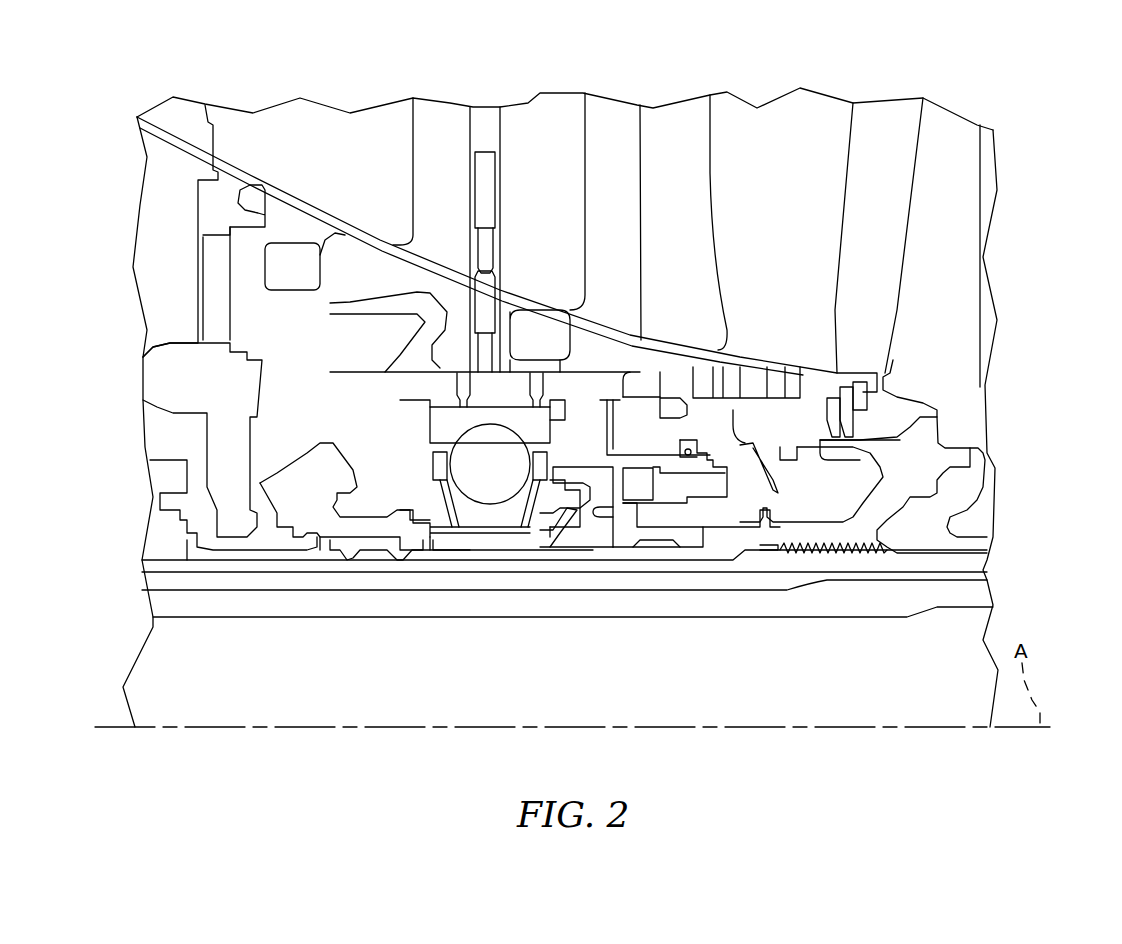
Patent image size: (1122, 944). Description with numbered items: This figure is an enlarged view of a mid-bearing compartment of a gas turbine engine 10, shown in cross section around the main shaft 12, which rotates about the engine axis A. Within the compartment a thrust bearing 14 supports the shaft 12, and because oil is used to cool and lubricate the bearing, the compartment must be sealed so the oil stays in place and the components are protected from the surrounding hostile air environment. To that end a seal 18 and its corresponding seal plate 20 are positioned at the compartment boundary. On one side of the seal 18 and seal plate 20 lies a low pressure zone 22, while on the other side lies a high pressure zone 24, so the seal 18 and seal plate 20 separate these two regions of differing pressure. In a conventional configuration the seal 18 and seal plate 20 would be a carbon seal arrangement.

The gas turbine engine 10 is at (1042, 140).
The main shaft 12 is at (733, 618).
The thrust bearing 14 is at (482, 510).
The seal 18 is at (640, 493).
The seal plate 20 is at (613, 487).
The low pressure zone 22 is at (340, 387).
The high pressure zone 24 is at (803, 487).